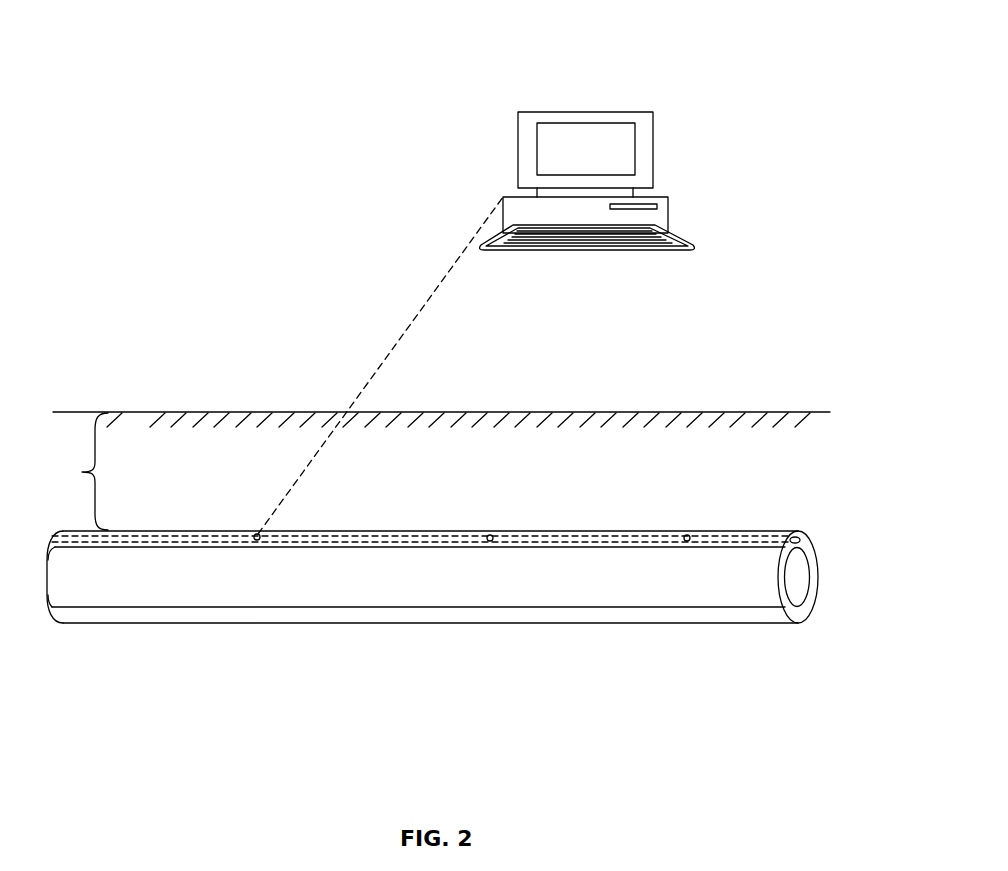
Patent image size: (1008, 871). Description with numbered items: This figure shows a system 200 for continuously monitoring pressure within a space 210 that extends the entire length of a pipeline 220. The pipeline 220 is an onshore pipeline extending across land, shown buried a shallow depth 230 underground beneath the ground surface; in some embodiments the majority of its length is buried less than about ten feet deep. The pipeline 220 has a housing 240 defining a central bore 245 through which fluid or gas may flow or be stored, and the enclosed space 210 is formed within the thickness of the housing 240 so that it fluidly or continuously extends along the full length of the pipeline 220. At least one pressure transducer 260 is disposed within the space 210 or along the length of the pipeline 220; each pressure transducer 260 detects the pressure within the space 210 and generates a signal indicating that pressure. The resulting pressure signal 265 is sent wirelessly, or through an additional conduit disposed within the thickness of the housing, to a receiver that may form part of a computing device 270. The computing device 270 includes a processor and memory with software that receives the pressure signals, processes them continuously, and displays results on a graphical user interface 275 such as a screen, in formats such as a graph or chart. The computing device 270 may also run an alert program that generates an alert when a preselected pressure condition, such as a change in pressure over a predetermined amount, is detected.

The system 200 is at (272, 40).
The space 210 is at (765, 538).
The pipeline 220 is at (210, 639).
The shallow depth 230 is at (72, 471).
The housing 240 is at (665, 615).
The central bore 245 is at (792, 578).
The pressure transducer 260 is at (255, 534).
The pressure signal 265 is at (380, 365).
The computing device 270 is at (653, 215).
The graphical user interface 275 is at (549, 139).